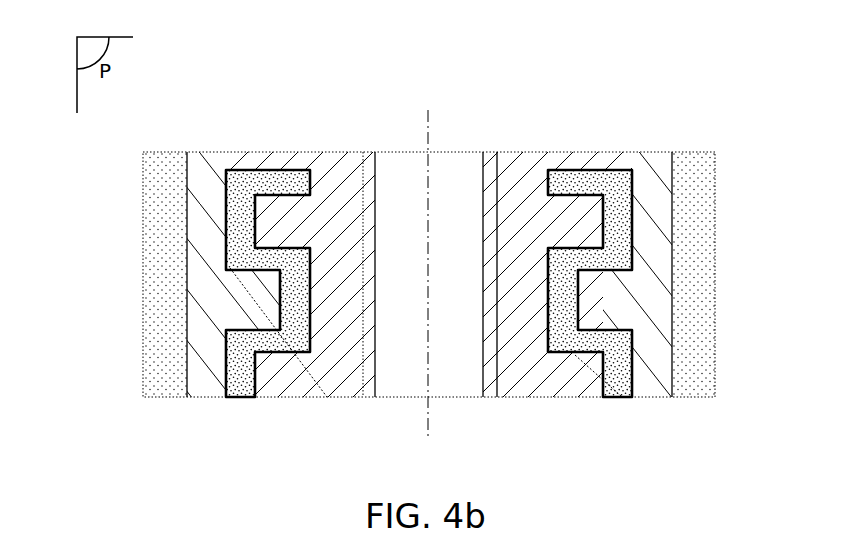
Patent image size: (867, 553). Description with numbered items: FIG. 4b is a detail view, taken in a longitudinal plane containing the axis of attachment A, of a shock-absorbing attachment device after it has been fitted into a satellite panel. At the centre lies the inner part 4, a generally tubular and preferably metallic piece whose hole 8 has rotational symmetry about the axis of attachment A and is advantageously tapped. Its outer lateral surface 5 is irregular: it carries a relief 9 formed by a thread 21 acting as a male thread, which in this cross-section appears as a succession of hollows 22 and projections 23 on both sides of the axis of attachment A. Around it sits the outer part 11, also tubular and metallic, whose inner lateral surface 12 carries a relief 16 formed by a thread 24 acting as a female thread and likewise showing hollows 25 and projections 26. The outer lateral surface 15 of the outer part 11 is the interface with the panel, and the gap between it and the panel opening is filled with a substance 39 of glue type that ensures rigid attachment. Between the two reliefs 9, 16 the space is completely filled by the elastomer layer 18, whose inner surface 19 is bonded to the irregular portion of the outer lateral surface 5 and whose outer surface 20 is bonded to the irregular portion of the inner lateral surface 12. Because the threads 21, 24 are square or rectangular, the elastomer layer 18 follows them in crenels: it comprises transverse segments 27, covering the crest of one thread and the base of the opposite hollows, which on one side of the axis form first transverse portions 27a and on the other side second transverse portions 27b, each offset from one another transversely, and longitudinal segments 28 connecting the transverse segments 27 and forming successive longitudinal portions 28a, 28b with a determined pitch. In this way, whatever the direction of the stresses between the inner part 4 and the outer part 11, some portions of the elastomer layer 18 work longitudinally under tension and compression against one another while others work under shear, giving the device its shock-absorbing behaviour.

The inner part 4 is at (381, 386).
The outer lateral surface 5 is at (311, 183).
The hole 8 is at (465, 213).
The relief 9 is at (551, 291).
The outer part 11 is at (680, 382).
The inner lateral surface 12 is at (262, 360).
The outer lateral surface 15 is at (183, 163).
The relief 16 is at (429, 274).
The elastomer layer 18 is at (237, 399).
The inner surface 19 is at (305, 340).
The outer surface 20 is at (272, 328).
The thread 21 is at (264, 399).
The hollows 22 is at (322, 338).
The projections 23 is at (312, 220).
The thread 24 is at (598, 293).
The hollows 25 is at (225, 200).
The projections 26 is at (280, 293).
The transverse segments 27 is at (428, 335).
The first transverse portions 27a is at (243, 218).
The second transverse portions 27b is at (283, 348).
The longitudinal segments 28 is at (428, 285).
The longitudinal portion 28a is at (262, 180).
The longitudinal portion 28b is at (265, 258).
The substance of a glue type 39 is at (173, 310).
The axis of attachment A is at (431, 116).